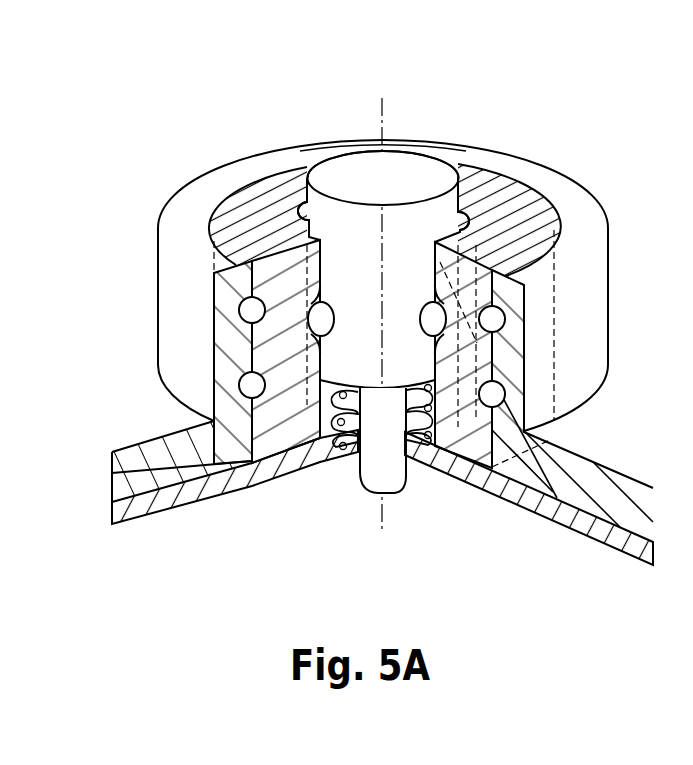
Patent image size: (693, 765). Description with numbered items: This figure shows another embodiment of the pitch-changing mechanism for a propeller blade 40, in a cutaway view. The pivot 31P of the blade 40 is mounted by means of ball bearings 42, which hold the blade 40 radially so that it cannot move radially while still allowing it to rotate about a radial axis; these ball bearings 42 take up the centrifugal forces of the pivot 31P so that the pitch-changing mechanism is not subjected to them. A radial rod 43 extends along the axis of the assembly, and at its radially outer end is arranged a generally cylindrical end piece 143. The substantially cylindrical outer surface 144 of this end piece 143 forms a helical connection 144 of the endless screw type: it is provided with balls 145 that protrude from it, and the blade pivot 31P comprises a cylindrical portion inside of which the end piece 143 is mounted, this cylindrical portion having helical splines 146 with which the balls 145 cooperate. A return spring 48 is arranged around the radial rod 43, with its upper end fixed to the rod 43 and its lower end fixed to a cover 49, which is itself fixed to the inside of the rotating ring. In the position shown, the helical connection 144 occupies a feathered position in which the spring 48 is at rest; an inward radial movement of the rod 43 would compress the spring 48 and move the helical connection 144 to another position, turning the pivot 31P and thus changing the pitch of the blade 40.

The blade 40 is at (560, 155).
The pivot 31P is at (518, 172).
The ball bearings 42 is at (505, 394).
The helical connection 144 is at (288, 268).
The end piece 143 is at (397, 168).
The helical splines 146 is at (290, 210).
The balls 145 is at (434, 320).
The return spring 48 is at (338, 442).
The radial rod 43 is at (395, 470).
The cover 49 is at (638, 546).